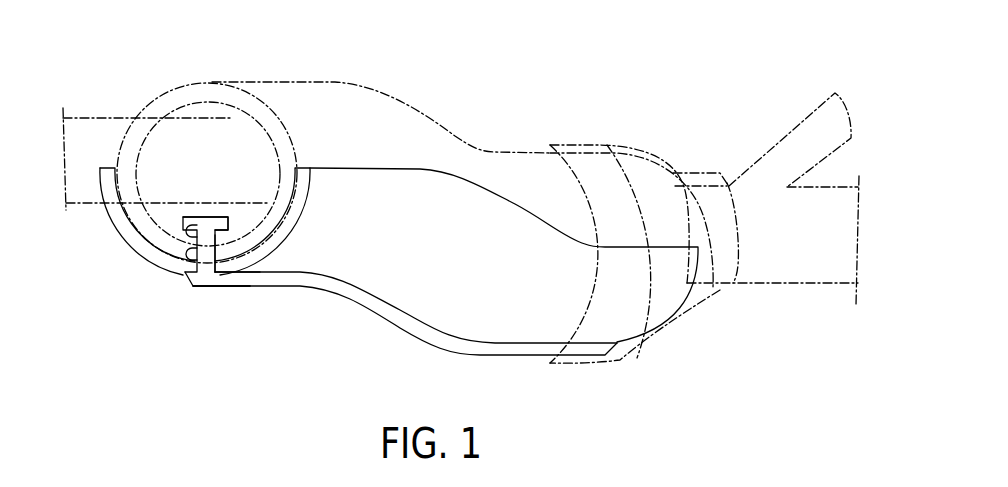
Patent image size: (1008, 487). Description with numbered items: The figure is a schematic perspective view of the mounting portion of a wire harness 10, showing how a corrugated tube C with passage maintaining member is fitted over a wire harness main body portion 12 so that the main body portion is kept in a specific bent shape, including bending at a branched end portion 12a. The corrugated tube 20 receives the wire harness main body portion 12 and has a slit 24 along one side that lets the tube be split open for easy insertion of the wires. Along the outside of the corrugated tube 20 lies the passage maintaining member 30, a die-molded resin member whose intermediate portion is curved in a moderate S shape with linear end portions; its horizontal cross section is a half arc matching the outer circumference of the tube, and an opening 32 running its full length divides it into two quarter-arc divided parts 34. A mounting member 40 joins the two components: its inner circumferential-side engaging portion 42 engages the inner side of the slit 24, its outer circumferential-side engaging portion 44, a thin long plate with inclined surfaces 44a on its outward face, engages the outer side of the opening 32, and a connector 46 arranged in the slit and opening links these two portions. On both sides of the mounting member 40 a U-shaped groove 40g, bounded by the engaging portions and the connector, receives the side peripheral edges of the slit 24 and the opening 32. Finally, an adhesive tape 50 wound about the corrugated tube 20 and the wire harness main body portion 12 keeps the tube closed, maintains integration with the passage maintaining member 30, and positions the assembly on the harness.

The wire harness 10 is at (583, 80).
The wire harness main body portion 12 is at (773, 211).
The branched end portion 12a is at (788, 130).
The corrugated tube 20 is at (335, 78).
The slit 24 is at (190, 230).
The passage maintaining member 30 is at (474, 184).
The opening 32 is at (190, 256).
The divided parts 34 is at (367, 182).
The mounting member 40 is at (213, 212).
The U-shaped groove 40g is at (216, 258).
The inner circumferential-side engaging portion 42 is at (193, 216).
The outer circumferential-side engaging portion 44 is at (203, 288).
The inclined surfaces 44a is at (237, 288).
The connector 46 is at (216, 266).
The adhesive tape 50 is at (640, 144).
The corrugated tube with passage maintaining member C is at (435, 112).